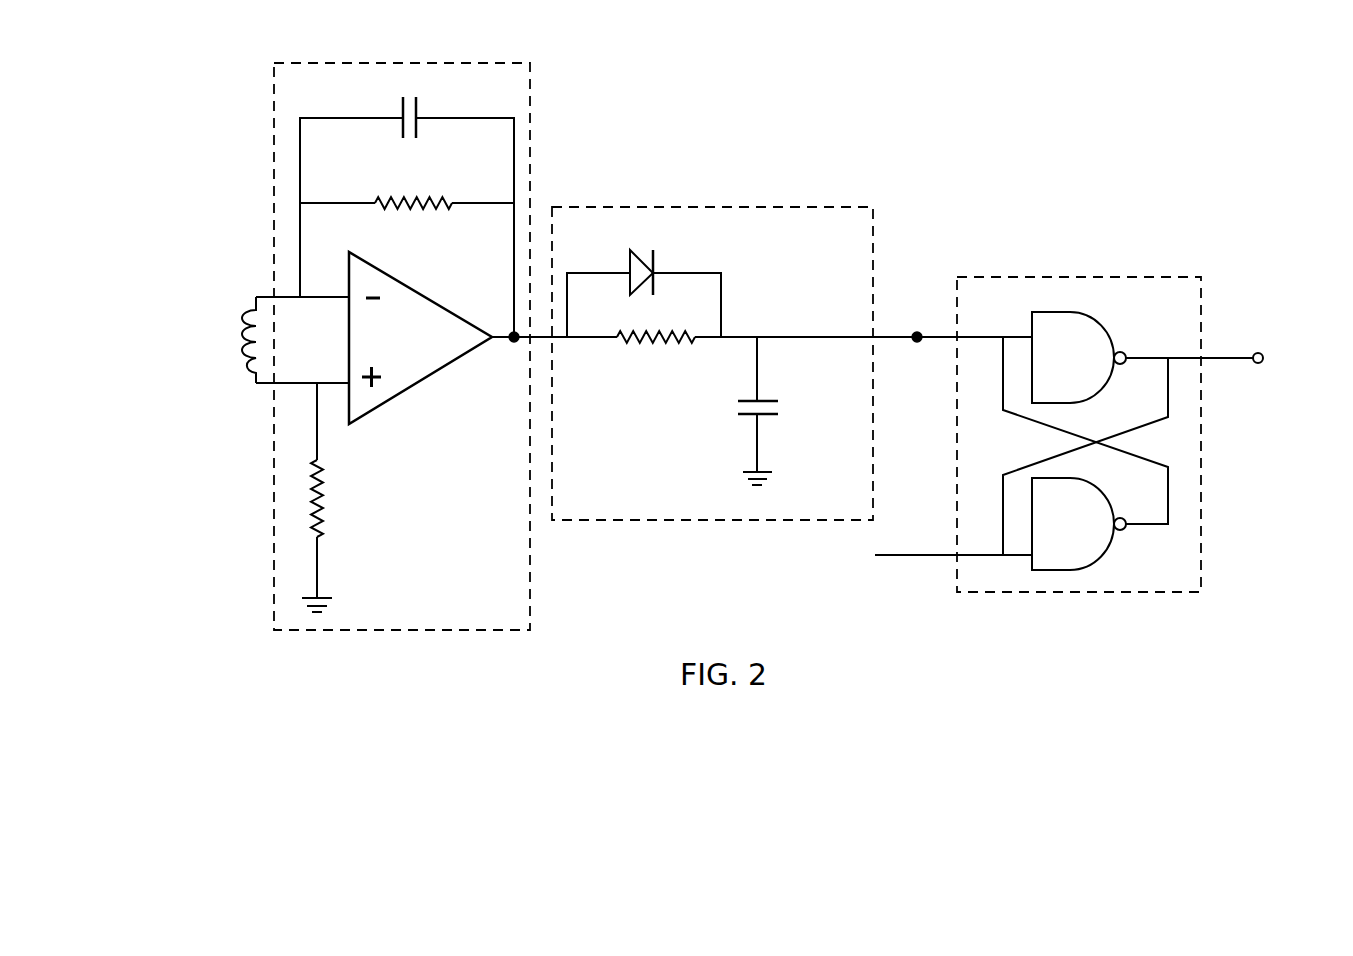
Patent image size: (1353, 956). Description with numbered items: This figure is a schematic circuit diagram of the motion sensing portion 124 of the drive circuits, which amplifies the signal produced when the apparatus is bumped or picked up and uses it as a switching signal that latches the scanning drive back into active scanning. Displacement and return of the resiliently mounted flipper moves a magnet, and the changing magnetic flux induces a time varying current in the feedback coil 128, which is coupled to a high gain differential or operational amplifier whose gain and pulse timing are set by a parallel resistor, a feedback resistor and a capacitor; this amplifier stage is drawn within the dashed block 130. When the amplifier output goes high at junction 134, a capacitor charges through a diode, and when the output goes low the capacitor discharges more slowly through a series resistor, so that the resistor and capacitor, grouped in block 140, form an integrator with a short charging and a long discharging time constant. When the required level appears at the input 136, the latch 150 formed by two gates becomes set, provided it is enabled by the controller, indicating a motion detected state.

The portion of the drive circuits 124 is at (827, 87).
The feedback coil 128 is at (242, 350).
The oscillator amplifier stage 130 is at (495, 612).
The junction 134 is at (513, 343).
The input to the latch 136 is at (918, 330).
The rectifier filter stage 140 is at (617, 502).
The latch 150 is at (1185, 577).